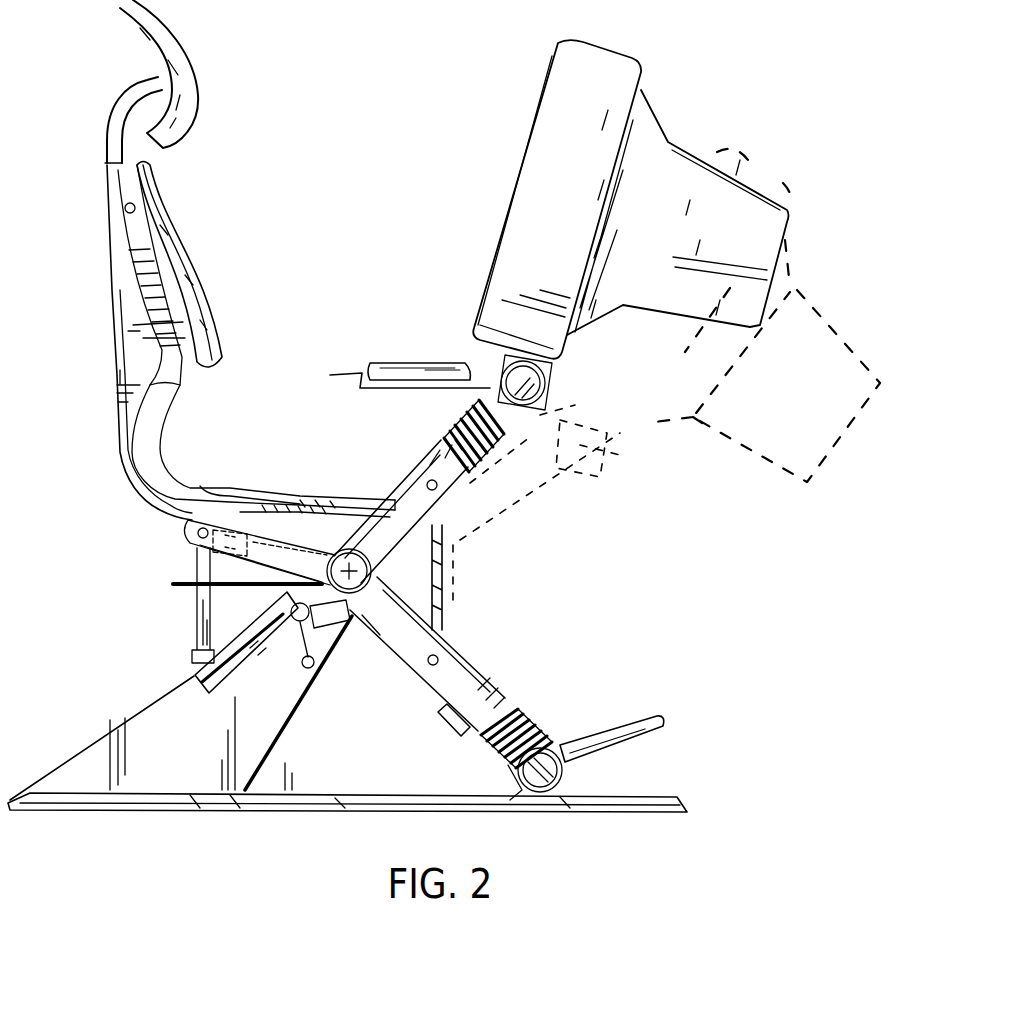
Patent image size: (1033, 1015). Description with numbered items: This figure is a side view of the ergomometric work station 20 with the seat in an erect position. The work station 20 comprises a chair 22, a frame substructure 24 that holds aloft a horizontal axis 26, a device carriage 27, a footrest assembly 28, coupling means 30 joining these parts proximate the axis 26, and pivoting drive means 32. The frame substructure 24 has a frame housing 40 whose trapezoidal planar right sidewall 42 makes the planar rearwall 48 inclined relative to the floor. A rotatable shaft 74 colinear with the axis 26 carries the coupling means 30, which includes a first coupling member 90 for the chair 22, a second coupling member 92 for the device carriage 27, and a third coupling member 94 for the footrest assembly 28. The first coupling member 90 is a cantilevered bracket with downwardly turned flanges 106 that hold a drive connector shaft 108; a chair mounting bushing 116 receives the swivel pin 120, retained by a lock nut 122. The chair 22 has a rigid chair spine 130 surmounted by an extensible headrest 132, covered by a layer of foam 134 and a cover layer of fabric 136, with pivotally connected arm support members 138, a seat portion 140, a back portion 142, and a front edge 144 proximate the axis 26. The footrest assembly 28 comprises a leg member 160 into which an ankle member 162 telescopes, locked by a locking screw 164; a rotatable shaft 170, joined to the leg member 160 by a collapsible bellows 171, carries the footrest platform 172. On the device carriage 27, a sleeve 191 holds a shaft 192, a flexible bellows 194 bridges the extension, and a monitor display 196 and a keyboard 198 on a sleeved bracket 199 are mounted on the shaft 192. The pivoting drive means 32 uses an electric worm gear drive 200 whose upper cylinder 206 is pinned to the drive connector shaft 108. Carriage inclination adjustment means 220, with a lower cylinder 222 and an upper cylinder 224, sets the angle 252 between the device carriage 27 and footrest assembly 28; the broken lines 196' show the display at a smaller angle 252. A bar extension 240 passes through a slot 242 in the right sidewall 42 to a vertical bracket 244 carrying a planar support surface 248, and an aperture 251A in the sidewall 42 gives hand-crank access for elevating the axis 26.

The ergomometric work station 20 is at (369, 163).
The chair 22 is at (229, 247).
The frame substructure 24 is at (204, 826).
The horizontal axis 26 is at (363, 577).
The device carriage 27 is at (453, 315).
The footrest assembly 28 is at (630, 677).
The coupling means 30 is at (389, 520).
The pivoting drive means 32 is at (172, 646).
The frame housing 40 is at (203, 780).
The planar right sidewall 42 is at (213, 737).
The planar rearwall 48 is at (77, 757).
The rotatable shaft 74 is at (367, 623).
The first coupling member 90 is at (318, 513).
The second coupling member 92 is at (457, 483).
The third coupling member 94 is at (463, 673).
The downwardly turned flanges 106 is at (170, 488).
The drive connector shaft 108 is at (198, 533).
The chair mounting bushing 116 is at (227, 530).
The swivel pin 120 is at (200, 556).
The lock nut 122 is at (316, 508).
The chair spine 130 is at (130, 309).
The extensible headrest 132 is at (190, 162).
The layer of foam 134 is at (157, 282).
The cover layer of fabric 136 is at (160, 428).
The arm support members 138 is at (207, 337).
The seat portion 140 is at (222, 508).
The back portion 142 is at (173, 407).
The front edge 144 is at (440, 556).
The leg member 160 is at (507, 693).
The ankle member 162 is at (543, 740).
The locking screw 164 is at (456, 737).
The rotatable shaft 170 is at (550, 773).
The collapsible bellows 171 is at (540, 723).
The footrest platform 172 is at (630, 723).
The sleeve 191 is at (547, 385).
The shaft 192 is at (558, 405).
The flexible bellows 194 is at (545, 438).
The monitor display 196 is at (630, 199).
The broken lines showing monitor display at another angle 196' is at (666, 375).
The keyboard 198 is at (415, 360).
The sleeved bracket 199 is at (410, 368).
The electric worm gear drive 200 is at (172, 674).
The upper cylinder 206 is at (203, 607).
The carriage inclination adjustment means 220 is at (519, 559).
The lower cylinder 222 is at (440, 625).
The upper cylinder 224 is at (437, 534).
The bar extension 240 is at (323, 668).
The slot 242 is at (235, 700).
The vertical bracket 244 is at (310, 622).
The planar support surface 248 is at (173, 584).
The aperture 251A is at (312, 670).
The angle 252 is at (625, 536).